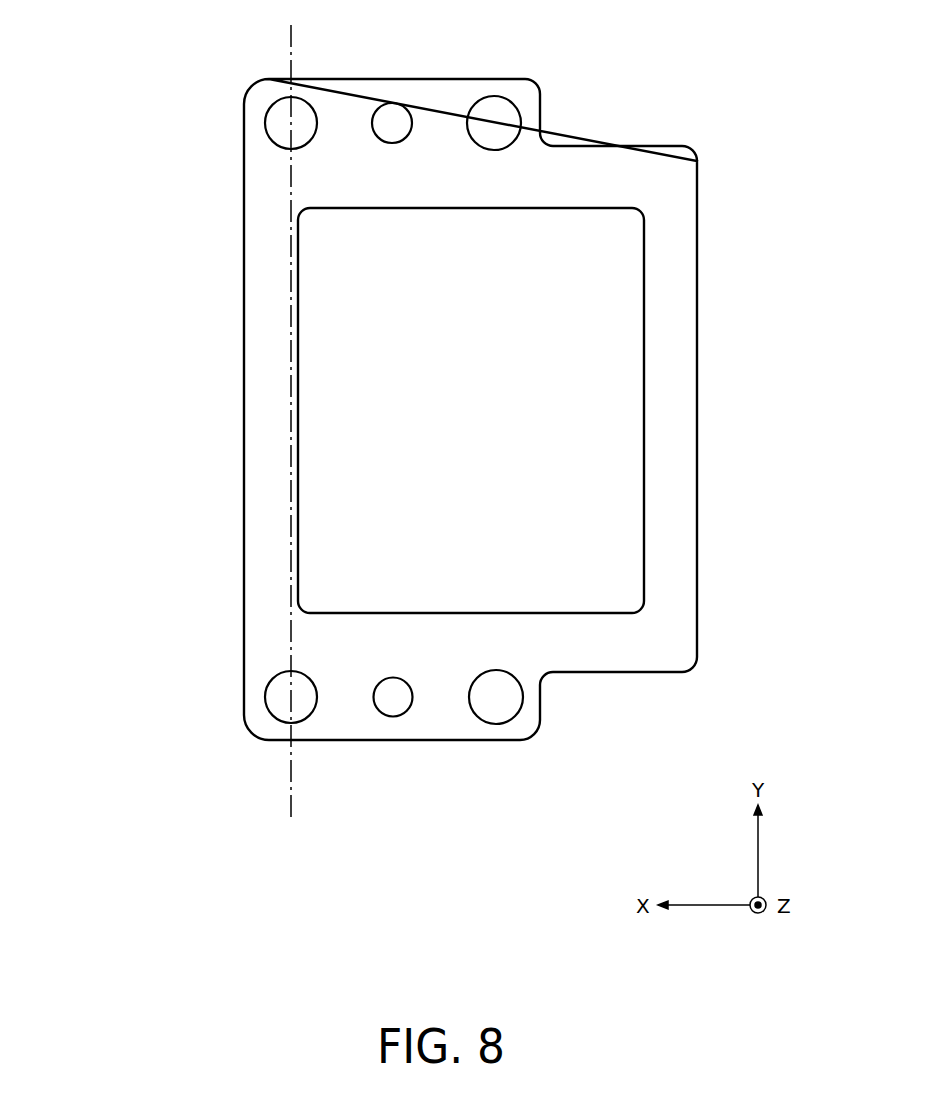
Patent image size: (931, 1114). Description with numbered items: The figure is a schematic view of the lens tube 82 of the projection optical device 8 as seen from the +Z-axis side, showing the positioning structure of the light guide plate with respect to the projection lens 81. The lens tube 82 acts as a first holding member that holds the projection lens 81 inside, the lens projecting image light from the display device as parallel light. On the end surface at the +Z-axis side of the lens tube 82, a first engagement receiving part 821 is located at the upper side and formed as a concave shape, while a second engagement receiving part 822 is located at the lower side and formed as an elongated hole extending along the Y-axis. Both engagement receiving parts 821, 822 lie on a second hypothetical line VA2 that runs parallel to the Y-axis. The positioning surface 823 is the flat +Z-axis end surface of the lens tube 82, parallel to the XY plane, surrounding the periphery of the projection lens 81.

The projection optical device 8 is at (445, 379).
The projection lens 81 is at (622, 453).
The lens tube 82 is at (697, 383).
The first engagement receiving part 821 is at (282, 101).
The second engagement receiving part 822 is at (283, 676).
The positioning surface 823 is at (597, 162).
The second hypothetical line VA2 is at (291, 802).